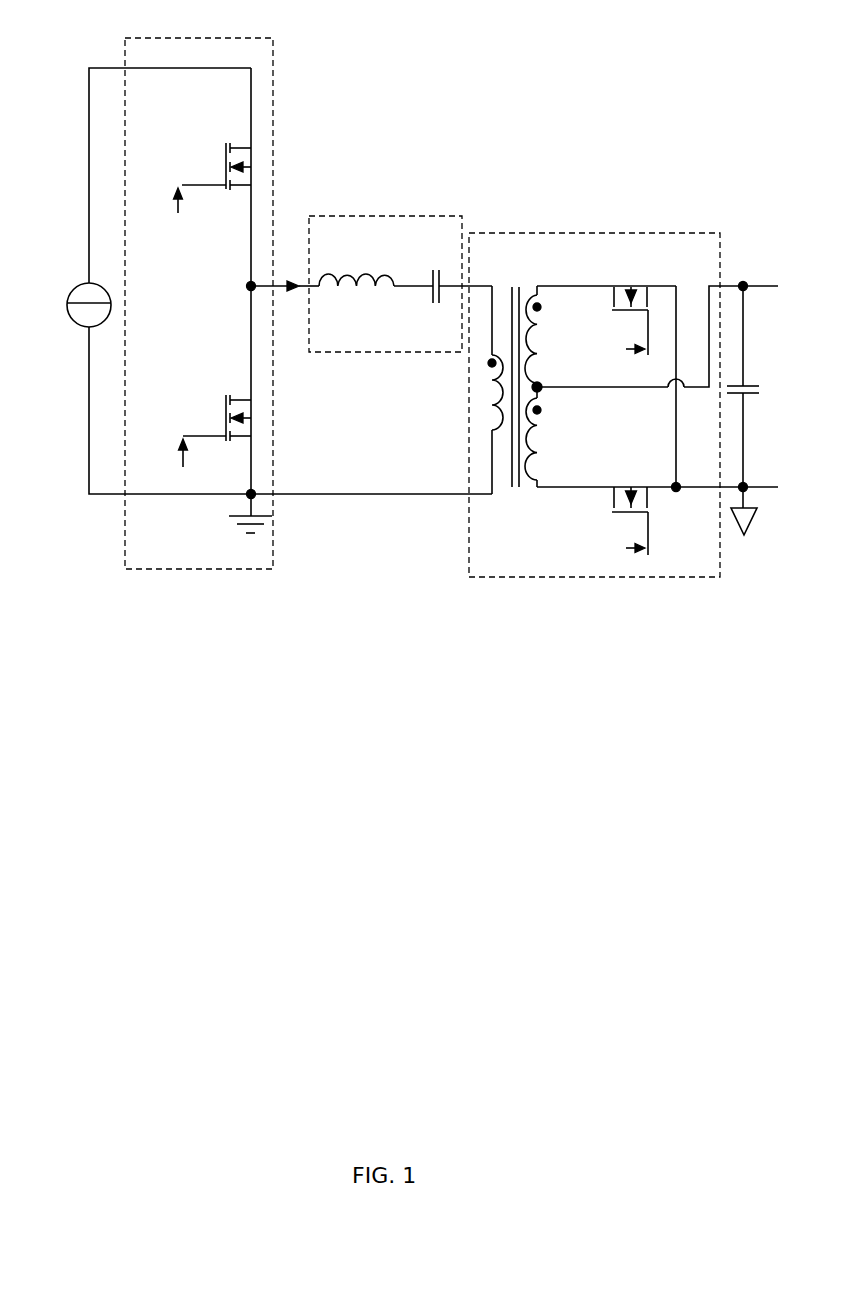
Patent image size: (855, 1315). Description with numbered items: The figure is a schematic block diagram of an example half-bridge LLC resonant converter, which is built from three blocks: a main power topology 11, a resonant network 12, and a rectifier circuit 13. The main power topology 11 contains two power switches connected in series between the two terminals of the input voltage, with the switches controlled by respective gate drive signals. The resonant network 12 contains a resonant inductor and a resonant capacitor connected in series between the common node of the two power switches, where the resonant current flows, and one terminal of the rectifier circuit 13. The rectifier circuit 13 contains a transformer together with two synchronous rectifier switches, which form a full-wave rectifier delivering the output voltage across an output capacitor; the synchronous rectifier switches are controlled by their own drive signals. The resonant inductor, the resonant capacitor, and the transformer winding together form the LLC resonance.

The main power topology 11 is at (273, 63).
The resonant network 12 is at (380, 211).
The rectifier circuit 13 is at (663, 233).